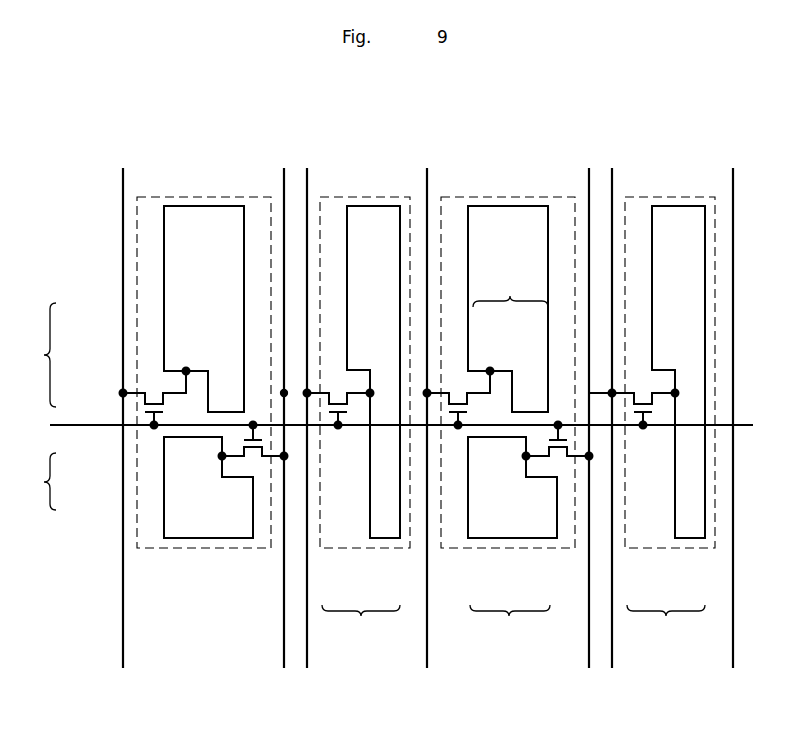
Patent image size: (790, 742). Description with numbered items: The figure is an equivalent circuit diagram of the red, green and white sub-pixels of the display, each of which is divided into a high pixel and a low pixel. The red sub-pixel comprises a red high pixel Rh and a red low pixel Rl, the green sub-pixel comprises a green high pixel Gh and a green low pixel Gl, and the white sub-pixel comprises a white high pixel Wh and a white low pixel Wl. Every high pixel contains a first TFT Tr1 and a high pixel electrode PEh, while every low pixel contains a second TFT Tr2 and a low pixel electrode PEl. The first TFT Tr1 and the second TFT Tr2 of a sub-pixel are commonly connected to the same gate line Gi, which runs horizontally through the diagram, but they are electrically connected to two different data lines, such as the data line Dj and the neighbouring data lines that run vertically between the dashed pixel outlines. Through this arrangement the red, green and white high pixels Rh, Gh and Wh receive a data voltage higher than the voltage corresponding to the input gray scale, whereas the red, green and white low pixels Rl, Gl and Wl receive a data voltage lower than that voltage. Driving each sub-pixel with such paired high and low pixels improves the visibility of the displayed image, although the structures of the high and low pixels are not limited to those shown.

The data line Dj is at (122, 408).
The gate line Gi is at (391, 424).
The high pixel electrode PEh is at (164, 308).
The low pixel electrode PEl is at (164, 497).
The first TFT Tr1 is at (142, 401).
The second TFT Tr2 is at (239, 445).
The red high pixel Rh is at (38, 355).
The red low pixel Rl is at (39, 481).
The green high pixel Gh is at (510, 291).
The green low pixel Gl is at (510, 621).
The white high pixel Wh is at (361, 620).
The white low pixel Wl is at (666, 621).